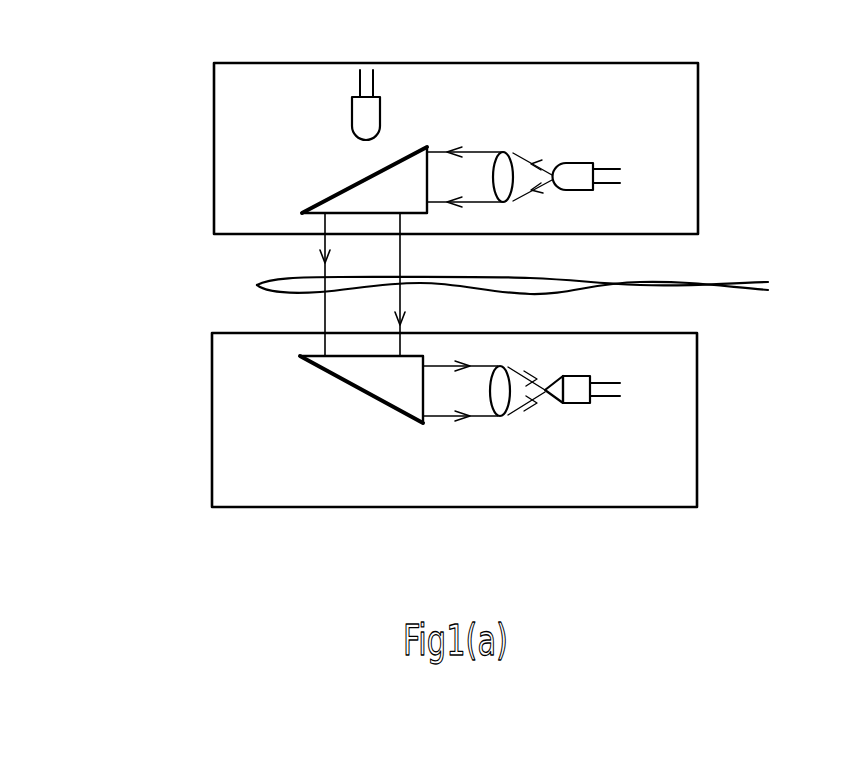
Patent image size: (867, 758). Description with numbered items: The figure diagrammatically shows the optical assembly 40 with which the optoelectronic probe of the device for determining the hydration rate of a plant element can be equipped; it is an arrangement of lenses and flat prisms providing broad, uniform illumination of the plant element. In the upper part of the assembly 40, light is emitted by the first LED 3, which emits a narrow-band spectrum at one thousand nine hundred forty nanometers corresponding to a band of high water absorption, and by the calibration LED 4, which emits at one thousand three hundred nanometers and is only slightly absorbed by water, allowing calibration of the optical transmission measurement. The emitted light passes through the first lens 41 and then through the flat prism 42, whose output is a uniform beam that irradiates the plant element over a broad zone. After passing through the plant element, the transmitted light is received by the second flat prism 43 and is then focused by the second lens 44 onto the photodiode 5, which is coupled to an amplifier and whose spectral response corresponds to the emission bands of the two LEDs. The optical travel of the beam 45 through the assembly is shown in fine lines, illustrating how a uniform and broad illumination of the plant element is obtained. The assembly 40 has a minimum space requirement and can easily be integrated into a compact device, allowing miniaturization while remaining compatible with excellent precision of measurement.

The optical assembly 40 is at (183, 172).
The flat prism 42 is at (360, 197).
The LED 4 is at (370, 110).
The first lens 41 is at (520, 160).
The LED 3 is at (583, 168).
The second flat prism 43 is at (358, 378).
The beam 45 is at (450, 418).
The second lens 44 is at (503, 402).
The photodiode 5 is at (577, 393).